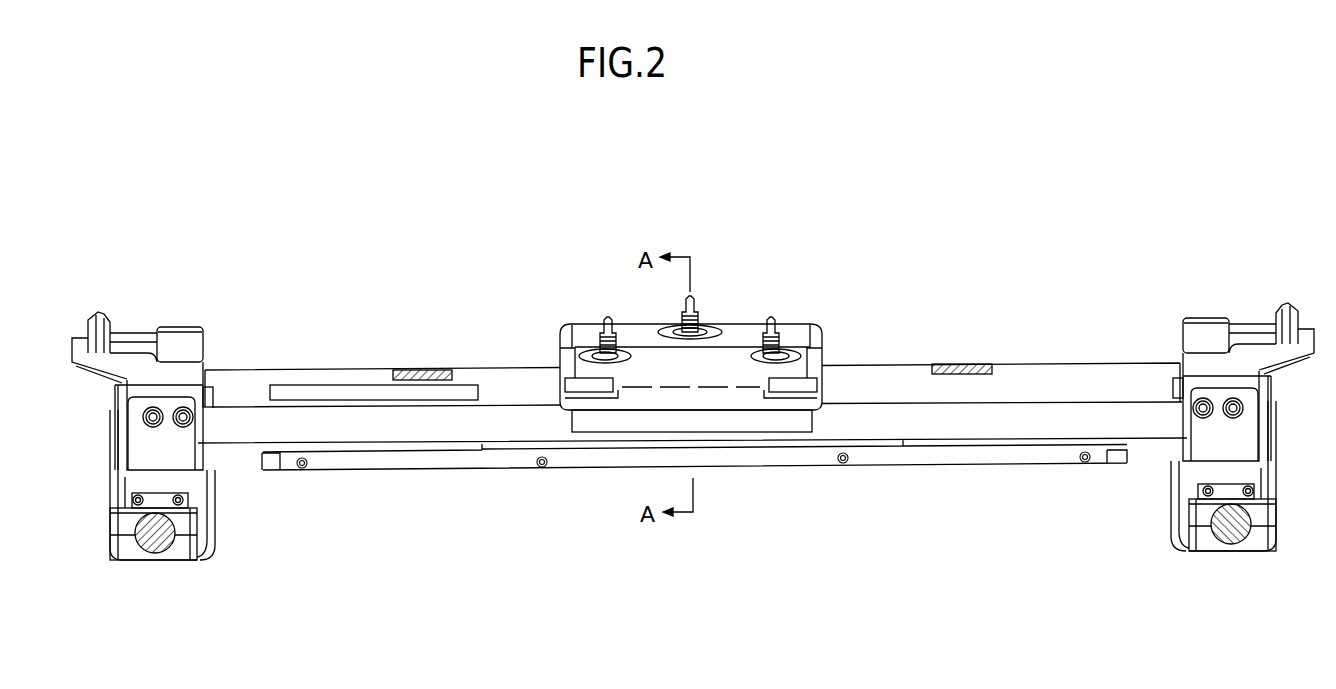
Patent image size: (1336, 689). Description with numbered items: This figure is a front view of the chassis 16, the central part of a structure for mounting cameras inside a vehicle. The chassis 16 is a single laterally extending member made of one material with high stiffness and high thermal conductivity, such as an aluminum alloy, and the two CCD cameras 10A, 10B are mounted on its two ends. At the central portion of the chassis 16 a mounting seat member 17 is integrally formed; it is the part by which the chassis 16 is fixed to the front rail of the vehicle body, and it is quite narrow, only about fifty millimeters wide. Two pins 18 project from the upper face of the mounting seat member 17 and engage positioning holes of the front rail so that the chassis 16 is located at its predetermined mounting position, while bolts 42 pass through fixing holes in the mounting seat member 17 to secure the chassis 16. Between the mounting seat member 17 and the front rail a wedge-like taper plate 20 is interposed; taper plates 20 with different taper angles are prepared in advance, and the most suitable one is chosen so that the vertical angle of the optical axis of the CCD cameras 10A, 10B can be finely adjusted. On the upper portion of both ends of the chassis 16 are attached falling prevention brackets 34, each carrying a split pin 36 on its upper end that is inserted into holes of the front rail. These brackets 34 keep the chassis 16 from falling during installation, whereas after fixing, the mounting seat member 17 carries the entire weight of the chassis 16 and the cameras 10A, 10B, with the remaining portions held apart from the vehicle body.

The CCD camera 10A is at (1236, 543).
The CCD camera 10B is at (158, 553).
The chassis 16 is at (910, 346).
The mounting seat member 17 is at (790, 425).
The pin 18 is at (606, 318).
The taper plate 20 is at (740, 322).
The falling prevention bracket 34 is at (73, 338).
The split pin 36 is at (90, 315).
The bolt 42 is at (598, 338).